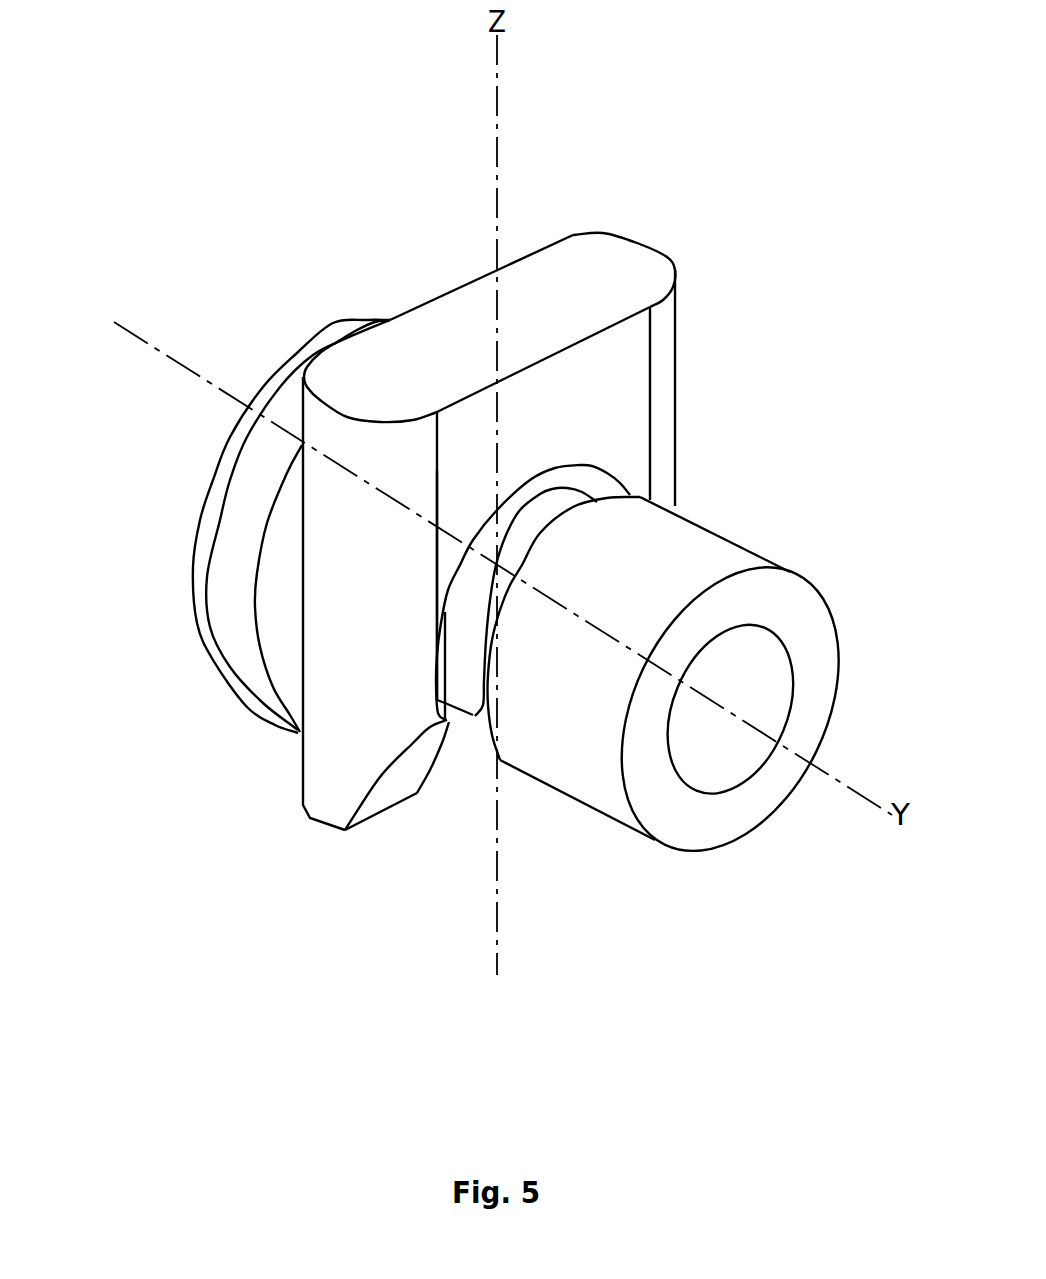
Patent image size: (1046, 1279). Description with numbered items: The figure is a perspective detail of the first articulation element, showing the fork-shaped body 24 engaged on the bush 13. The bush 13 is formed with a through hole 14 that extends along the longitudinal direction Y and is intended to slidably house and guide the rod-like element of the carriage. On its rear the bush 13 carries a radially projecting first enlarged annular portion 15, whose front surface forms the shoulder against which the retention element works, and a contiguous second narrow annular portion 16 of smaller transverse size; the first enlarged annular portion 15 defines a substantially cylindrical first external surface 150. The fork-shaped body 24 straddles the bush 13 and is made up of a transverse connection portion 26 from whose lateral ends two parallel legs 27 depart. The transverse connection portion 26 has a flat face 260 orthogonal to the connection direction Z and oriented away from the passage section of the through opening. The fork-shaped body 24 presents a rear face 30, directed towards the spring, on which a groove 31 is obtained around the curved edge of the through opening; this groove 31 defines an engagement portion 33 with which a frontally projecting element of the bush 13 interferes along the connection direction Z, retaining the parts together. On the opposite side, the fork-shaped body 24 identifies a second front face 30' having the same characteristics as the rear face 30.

The bush 13 is at (295, 330).
The through hole 14 is at (708, 742).
The first enlarged annular portion 15 is at (770, 542).
The second narrow annular portion 16 is at (475, 648).
The fork-shaped body 24 is at (627, 210).
The transverse connection portion 26 is at (477, 455).
The parallel legs 27 is at (380, 712).
The rear face 30 is at (556, 485).
The second front face 30' is at (256, 603).
The groove 31 is at (597, 488).
The engagement portion 33 is at (452, 720).
The first external surface 150 is at (635, 601).
The flat face 260 is at (575, 323).